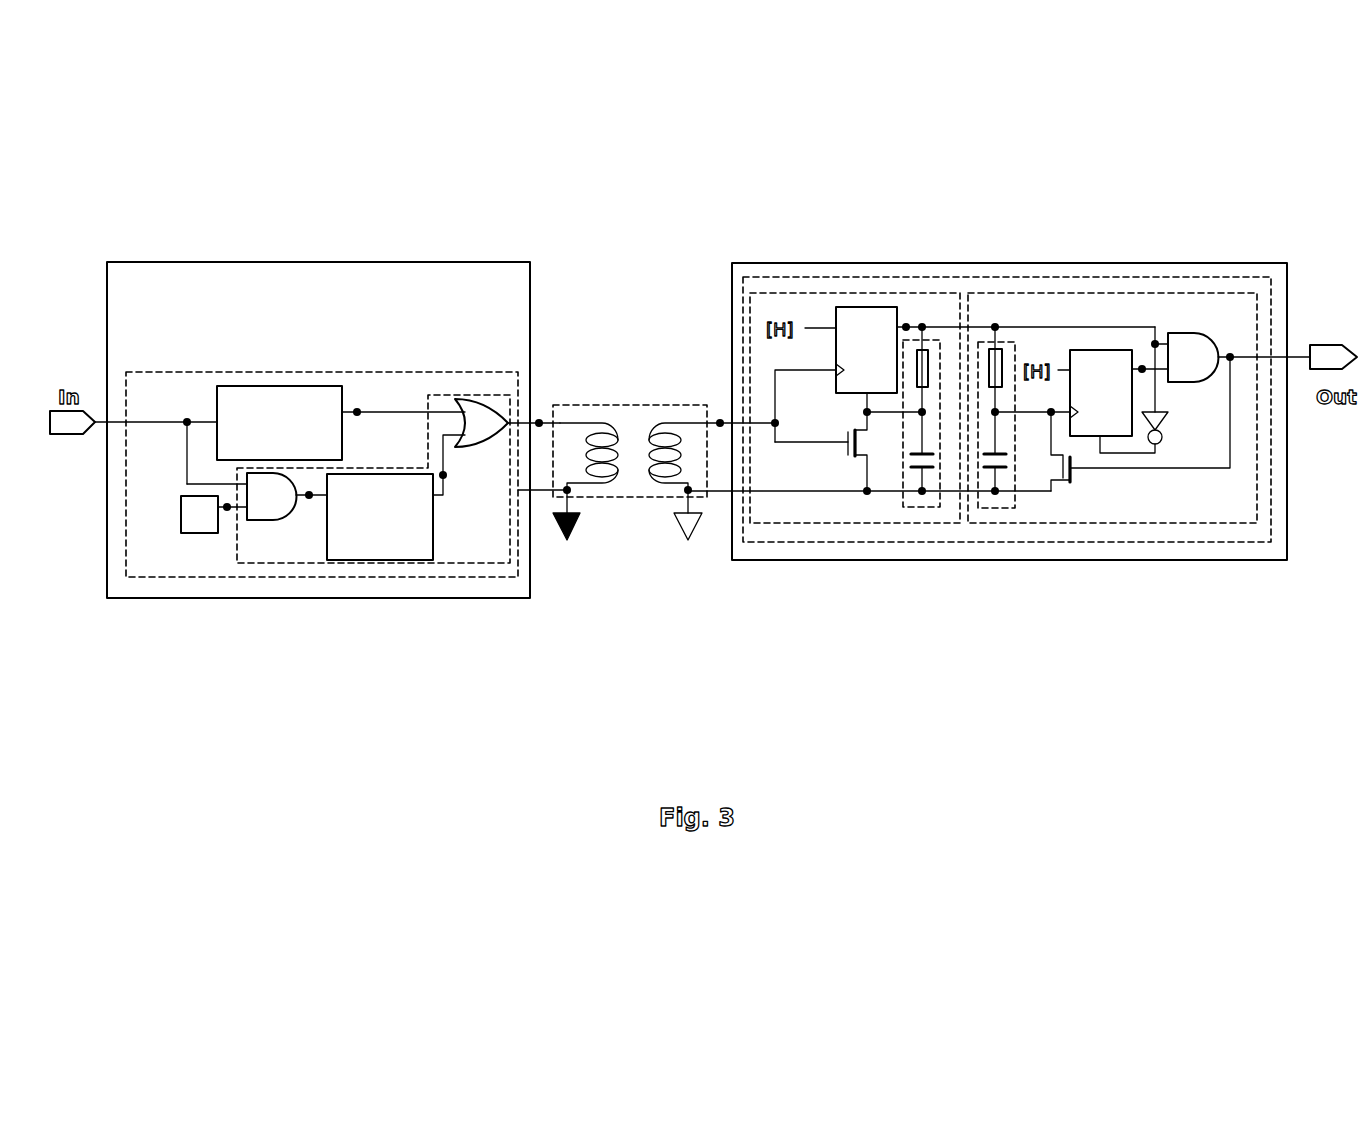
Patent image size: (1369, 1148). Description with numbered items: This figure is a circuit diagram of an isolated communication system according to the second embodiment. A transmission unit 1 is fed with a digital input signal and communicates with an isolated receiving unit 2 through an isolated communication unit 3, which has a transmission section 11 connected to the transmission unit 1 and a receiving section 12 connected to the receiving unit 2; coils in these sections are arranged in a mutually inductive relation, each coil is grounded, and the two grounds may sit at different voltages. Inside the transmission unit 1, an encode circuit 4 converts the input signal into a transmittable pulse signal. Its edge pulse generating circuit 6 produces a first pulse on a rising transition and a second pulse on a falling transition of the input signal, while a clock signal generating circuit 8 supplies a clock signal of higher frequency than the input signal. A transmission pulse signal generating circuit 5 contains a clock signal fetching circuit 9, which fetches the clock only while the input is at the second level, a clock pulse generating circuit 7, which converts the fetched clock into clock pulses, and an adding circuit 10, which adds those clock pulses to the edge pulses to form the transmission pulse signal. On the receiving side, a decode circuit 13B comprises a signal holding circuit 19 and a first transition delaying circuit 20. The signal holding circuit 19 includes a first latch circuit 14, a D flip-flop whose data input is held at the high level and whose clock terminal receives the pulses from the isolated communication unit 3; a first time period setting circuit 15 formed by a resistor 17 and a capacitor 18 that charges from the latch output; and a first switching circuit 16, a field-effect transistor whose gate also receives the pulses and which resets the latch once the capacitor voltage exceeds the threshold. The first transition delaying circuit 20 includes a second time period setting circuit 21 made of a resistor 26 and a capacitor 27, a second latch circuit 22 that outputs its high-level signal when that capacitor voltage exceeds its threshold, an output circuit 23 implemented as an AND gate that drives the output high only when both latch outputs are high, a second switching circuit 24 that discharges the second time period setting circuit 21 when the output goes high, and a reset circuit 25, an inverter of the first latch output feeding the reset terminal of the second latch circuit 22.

The transmission unit 1 is at (245, 262).
The receiving unit 2 is at (787, 263).
The isolated communication unit 3 is at (622, 405).
The encode circuit 4 is at (283, 372).
The transmission pulse signal generating circuit 5 is at (400, 575).
The edge pulse generating circuit 6 is at (232, 386).
The clock pulse generating circuit 7 is at (327, 540).
The clock signal generating circuit 8 is at (199, 533).
The clock signal fetching circuit 9 is at (262, 520).
The adding circuit 10 is at (478, 447).
The transmission section 11 is at (597, 507).
The receiving section 12 is at (666, 508).
The decode circuit 13B is at (857, 277).
The first latch circuit 14 is at (883, 307).
The first time period setting circuit 15 is at (925, 513).
The first switching circuit 16 is at (848, 450).
The resistor 17 is at (928, 365).
The capacitor 18 is at (911, 470).
The signal holding circuit 19 is at (785, 525).
The first transition delaying circuit 20 is at (1140, 523).
The second time period setting circuit 21 is at (995, 523).
The second latch circuit 22 is at (1100, 350).
The output circuit 23 is at (1200, 333).
The second switching circuit 24 is at (1075, 481).
The reset circuit 25 is at (1165, 425).
The resistor 26 is at (1003, 360).
The capacitor 27 is at (1002, 470).